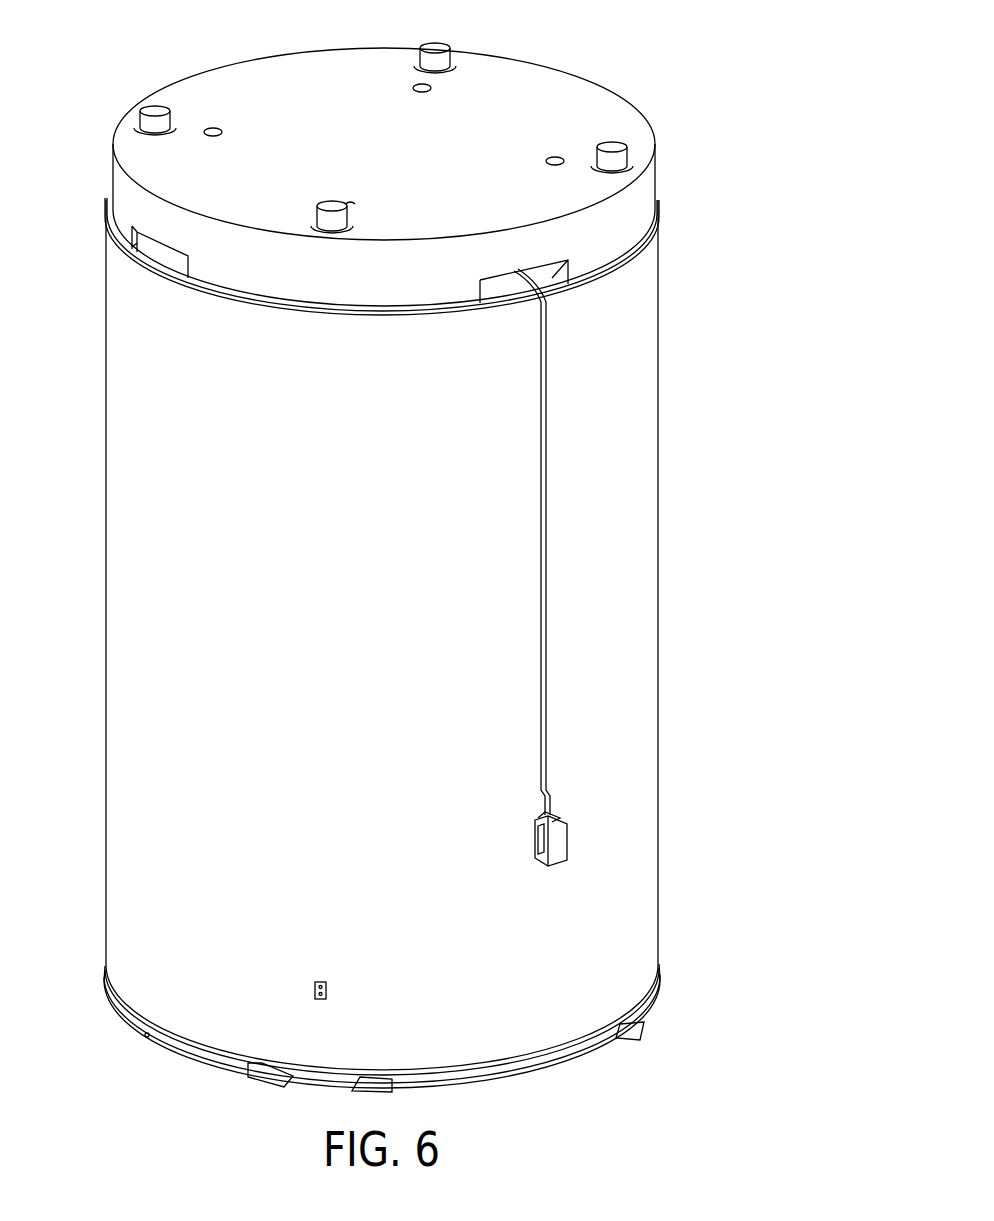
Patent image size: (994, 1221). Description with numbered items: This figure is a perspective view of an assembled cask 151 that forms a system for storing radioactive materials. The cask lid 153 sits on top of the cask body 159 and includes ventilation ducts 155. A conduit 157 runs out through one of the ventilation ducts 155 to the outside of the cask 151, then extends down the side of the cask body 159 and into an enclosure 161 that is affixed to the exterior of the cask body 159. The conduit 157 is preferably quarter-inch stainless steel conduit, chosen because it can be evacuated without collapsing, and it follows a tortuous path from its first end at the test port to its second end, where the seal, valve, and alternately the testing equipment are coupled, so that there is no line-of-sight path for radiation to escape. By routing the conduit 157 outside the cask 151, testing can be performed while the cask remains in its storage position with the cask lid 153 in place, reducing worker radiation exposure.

The cask 151 is at (722, 60).
The cask lid 153 is at (134, 148).
The ventilation ducts 155 is at (568, 264).
The conduit 157 is at (547, 495).
The cask body 159 is at (635, 340).
The enclosure 161 is at (567, 833).